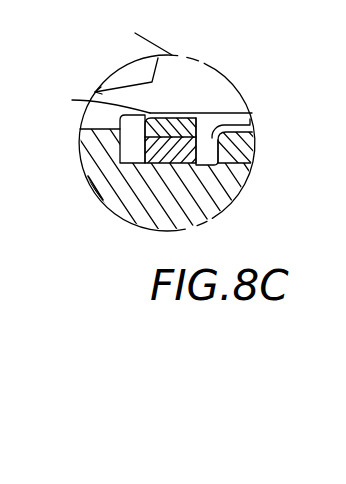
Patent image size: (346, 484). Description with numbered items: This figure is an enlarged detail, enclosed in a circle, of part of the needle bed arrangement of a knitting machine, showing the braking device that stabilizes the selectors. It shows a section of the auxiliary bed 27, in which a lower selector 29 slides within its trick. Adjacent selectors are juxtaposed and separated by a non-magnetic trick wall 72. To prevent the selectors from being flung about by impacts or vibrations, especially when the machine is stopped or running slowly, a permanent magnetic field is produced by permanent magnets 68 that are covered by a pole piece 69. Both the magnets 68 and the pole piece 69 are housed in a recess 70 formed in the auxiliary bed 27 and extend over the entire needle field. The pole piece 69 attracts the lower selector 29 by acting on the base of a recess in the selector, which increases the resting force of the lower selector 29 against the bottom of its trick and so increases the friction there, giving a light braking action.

The auxiliary bed 27 is at (206, 199).
The lower selector 29 is at (190, 87).
The permanent magnets 68 is at (206, 152).
The pole piece 69 is at (85, 99).
The recess 70 is at (253, 115).
The non-magnetic trick wall 72 is at (250, 124).